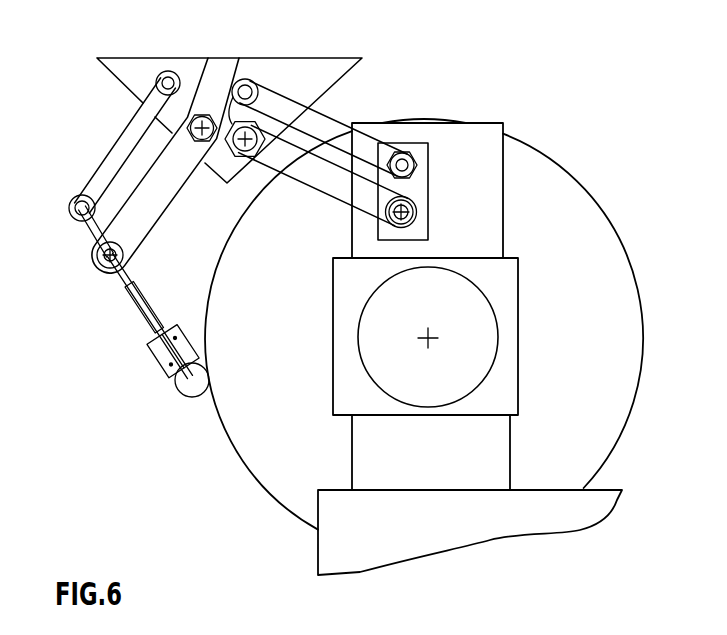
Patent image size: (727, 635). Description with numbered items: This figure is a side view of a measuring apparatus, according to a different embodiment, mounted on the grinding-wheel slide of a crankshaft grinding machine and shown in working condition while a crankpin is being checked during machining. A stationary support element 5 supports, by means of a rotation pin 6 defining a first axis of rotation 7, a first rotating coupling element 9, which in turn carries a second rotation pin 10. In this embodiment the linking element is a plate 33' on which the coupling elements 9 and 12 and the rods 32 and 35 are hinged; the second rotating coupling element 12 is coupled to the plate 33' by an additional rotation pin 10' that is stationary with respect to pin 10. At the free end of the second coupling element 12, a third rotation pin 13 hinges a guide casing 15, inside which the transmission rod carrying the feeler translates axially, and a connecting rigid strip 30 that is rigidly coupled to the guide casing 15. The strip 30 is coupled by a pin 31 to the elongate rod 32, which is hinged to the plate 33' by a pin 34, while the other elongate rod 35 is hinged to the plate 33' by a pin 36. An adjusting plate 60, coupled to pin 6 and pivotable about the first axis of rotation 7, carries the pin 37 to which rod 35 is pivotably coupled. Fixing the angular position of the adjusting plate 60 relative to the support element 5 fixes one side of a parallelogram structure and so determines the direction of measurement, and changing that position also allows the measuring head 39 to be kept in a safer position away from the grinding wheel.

The stationary support element 5 is at (497, 168).
The rotation pin 6 is at (430, 223).
The first axis of rotation 7 is at (418, 208).
The first rotating coupling element 9 is at (335, 125).
The second rotation pin 10 is at (243, 93).
The additional rotation pin 10' is at (202, 84).
The second rotating coupling element 12 is at (127, 190).
The third rotation pin 13 is at (103, 270).
The guide casing 15 is at (143, 300).
The connecting rigid strip 30 is at (97, 233).
The pin 31 is at (72, 212).
The elongate element or rod 32 is at (133, 140).
The plate 33' is at (202, 114).
The pin 34 is at (167, 75).
The elongate element or rod 35 is at (355, 135).
The pin 36 is at (247, 87).
The pin 37 is at (425, 142).
The measuring head 39 is at (138, 359).
The adjusting plate 60 is at (418, 178).